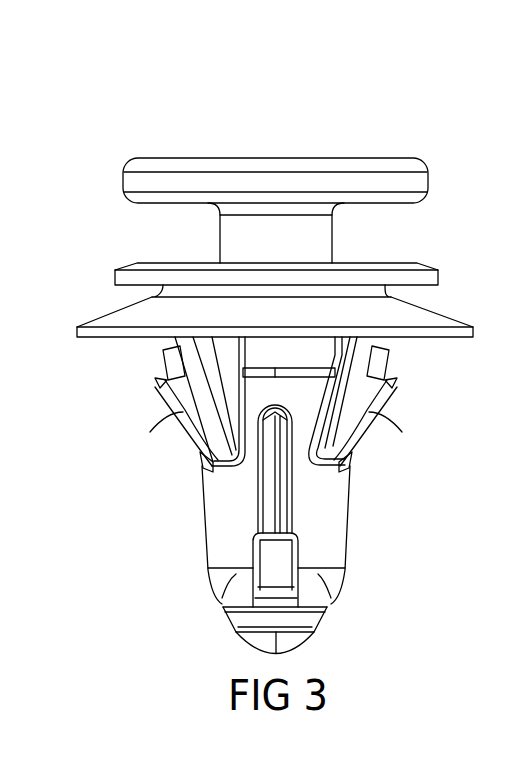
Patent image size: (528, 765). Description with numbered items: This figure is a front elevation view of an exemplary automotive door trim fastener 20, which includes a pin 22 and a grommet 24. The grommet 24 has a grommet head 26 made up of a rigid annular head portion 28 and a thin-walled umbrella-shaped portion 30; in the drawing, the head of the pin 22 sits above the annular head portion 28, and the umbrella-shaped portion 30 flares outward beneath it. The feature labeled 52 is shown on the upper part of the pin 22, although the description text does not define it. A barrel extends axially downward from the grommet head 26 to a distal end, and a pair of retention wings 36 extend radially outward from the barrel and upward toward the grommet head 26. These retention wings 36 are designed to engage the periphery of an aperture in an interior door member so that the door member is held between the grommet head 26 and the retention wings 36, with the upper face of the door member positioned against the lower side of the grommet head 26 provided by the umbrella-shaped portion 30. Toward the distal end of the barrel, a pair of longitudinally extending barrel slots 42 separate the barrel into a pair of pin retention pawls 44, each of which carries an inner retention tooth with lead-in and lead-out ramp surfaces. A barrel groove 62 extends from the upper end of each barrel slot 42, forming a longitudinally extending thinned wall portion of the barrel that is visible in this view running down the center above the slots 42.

The automotive door trim fastener 20 is at (324, 114).
The pin 22 is at (434, 153).
The head upper portion 52 is at (122, 182).
The grommet 24 is at (434, 259).
The rigid annular head portion 28 is at (113, 278).
The grommet head 26 is at (98, 322).
The umbrella-shaped portion 30 is at (445, 338).
The retention wings 36 is at (190, 415).
The barrel groove 62 is at (277, 485).
The barrel slots 42 is at (275, 556).
The pin retention pawls 44 is at (215, 595).